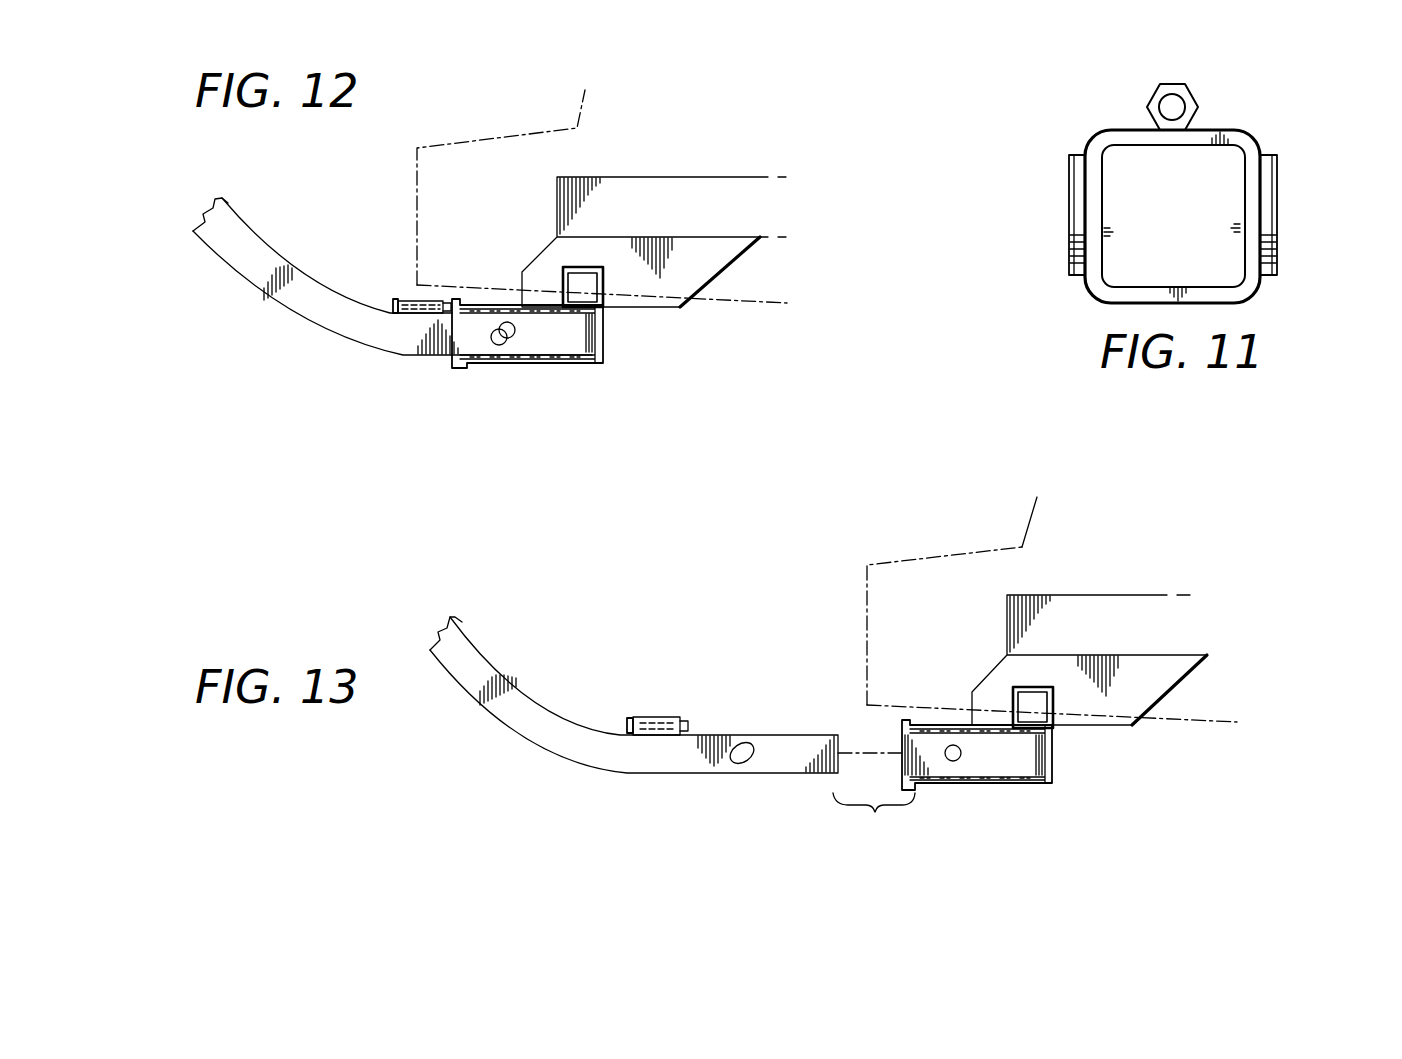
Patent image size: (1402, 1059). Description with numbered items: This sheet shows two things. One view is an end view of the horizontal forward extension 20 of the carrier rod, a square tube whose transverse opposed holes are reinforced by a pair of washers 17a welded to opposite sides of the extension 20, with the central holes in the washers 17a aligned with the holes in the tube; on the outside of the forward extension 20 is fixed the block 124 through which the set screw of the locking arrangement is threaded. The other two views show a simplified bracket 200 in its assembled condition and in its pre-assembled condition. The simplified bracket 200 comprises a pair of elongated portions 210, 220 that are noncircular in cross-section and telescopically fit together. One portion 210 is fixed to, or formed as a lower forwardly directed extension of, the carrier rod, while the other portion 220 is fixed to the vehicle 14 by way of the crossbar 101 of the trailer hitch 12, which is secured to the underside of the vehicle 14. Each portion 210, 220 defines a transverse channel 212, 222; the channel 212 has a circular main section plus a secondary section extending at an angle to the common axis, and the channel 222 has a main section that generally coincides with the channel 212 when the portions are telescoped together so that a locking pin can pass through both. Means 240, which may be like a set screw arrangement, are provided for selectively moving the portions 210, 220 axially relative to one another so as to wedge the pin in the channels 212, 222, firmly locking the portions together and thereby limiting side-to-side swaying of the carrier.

In FIG. 12, the trailer hitch 12 is at (734, 259).
In FIG. 13, the trailer hitch 12 is at (1138, 712).
In FIG. 12, the vehicle 14 is at (470, 121).
In FIG. 11, the forward extension 20 is at (1252, 129).
In FIG. 11, the washers 17a is at (1069, 262).
In FIG. 11, the block 124 is at (1150, 95).
In FIG. 12, the crossbar 101 is at (604, 285).
In FIG. 13, the crossbar 101 is at (1054, 698).
In FIG. 12, the simplified bracket 200 is at (305, 245).
In FIG. 13, the simplified bracket 200 is at (840, 712).
In FIG. 12, the elongated portion 210 is at (392, 360).
In FIG. 13, the elongated portion 210 is at (770, 777).
In FIG. 12, the transverse channel 212 is at (508, 340).
In FIG. 13, the transverse channel 212 is at (741, 742).
In FIG. 12, the elongated portion 220 is at (592, 367).
In FIG. 13, the elongated portion 220 is at (1031, 786).
In FIG. 12, the transverse channel 222 is at (500, 326).
In FIG. 13, the transverse channel 222 is at (960, 761).
In FIG. 12, the means for moving the portions axially 240 is at (407, 297).
In FIG. 13, the means for moving the portions axially 240 is at (657, 714).